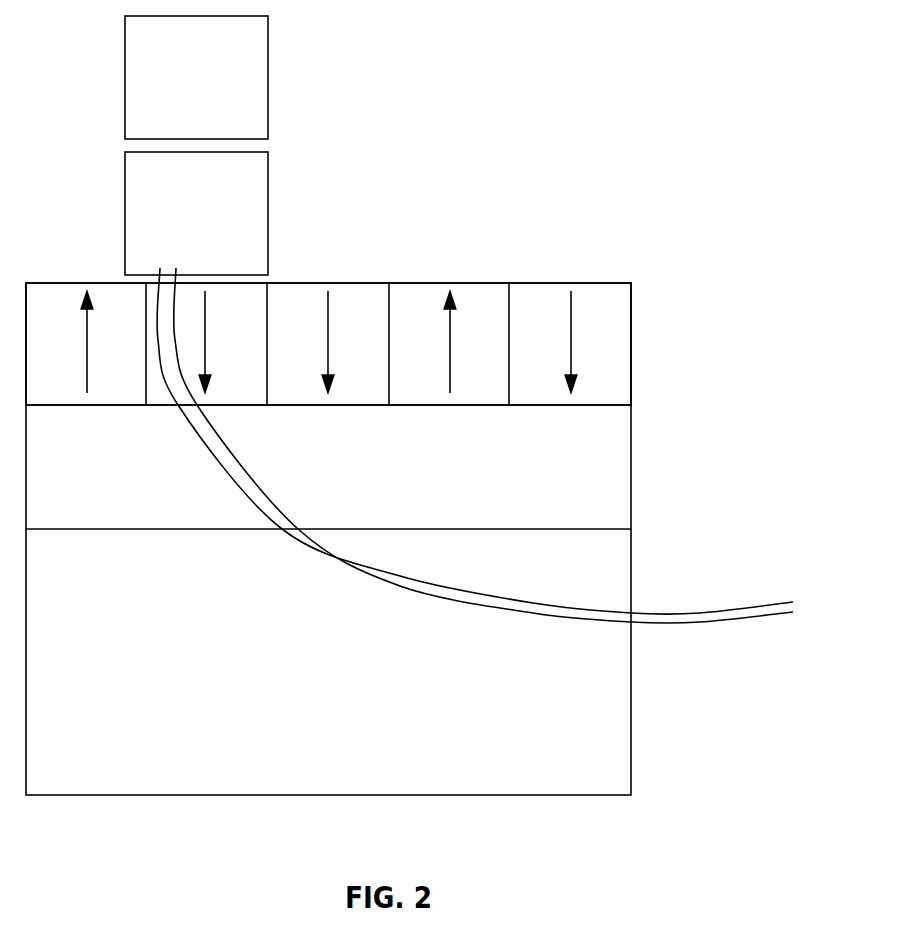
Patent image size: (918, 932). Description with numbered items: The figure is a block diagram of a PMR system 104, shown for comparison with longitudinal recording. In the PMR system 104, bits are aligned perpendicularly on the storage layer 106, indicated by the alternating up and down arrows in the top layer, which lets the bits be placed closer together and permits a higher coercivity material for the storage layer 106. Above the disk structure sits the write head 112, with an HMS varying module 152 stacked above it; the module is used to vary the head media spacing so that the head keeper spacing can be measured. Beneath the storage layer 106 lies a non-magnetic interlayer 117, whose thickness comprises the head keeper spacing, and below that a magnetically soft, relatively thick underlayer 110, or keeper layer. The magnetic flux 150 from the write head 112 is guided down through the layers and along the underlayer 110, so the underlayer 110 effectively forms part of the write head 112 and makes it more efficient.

The PMR system 104 is at (455, 437).
The storage layer 106 is at (652, 367).
The underlayer 110 is at (590, 755).
The write head 112 is at (196, 213).
The non-magnetic interlayer 117 is at (572, 468).
The magnetic flux 150 is at (753, 592).
The HMS varying module 152 is at (196, 77).